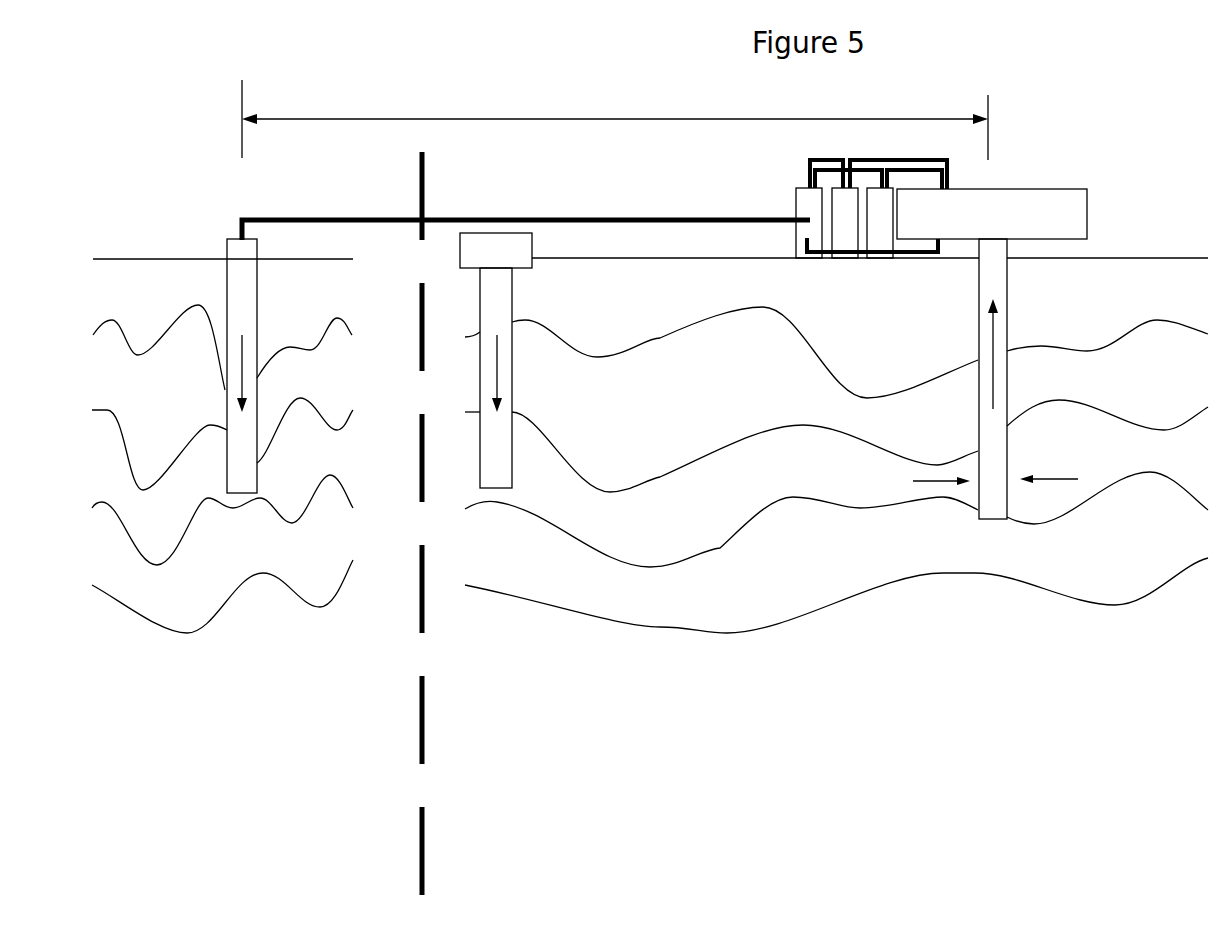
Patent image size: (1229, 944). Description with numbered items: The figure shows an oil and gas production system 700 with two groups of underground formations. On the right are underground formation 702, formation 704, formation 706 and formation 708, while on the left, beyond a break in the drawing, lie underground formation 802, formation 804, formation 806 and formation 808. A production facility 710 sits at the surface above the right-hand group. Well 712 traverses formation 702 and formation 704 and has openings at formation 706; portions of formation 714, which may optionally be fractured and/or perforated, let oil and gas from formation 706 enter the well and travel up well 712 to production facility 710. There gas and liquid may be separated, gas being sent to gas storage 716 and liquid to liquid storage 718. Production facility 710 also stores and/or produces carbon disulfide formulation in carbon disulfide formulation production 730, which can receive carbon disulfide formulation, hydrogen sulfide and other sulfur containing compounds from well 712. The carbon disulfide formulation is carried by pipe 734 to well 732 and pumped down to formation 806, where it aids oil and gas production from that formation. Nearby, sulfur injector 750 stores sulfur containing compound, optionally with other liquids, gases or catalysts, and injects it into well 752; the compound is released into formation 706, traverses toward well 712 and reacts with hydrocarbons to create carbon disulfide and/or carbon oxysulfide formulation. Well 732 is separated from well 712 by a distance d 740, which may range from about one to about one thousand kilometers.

The system 700 is at (608, 75).
The distance d 740 is at (242, 100).
The well 732 is at (225, 276).
The pipe 734 is at (548, 218).
The sulfur injector 750 is at (496, 250).
The well 752 is at (512, 288).
The carbon disulfide formulation production 730 is at (805, 202).
The liquid storage 718 is at (848, 210).
The gas storage 716 is at (877, 210).
The production facility 710 is at (1010, 224).
The well 712 is at (1008, 285).
The portions of formation 714 is at (949, 488).
The underground formation 702 is at (836, 347).
The formation 704 is at (836, 425).
The formation 706 is at (836, 497).
The formation 708 is at (836, 567).
The underground formation 802 is at (222, 339).
The formation 804 is at (222, 426).
The formation 806 is at (222, 495).
The formation 808 is at (222, 580).